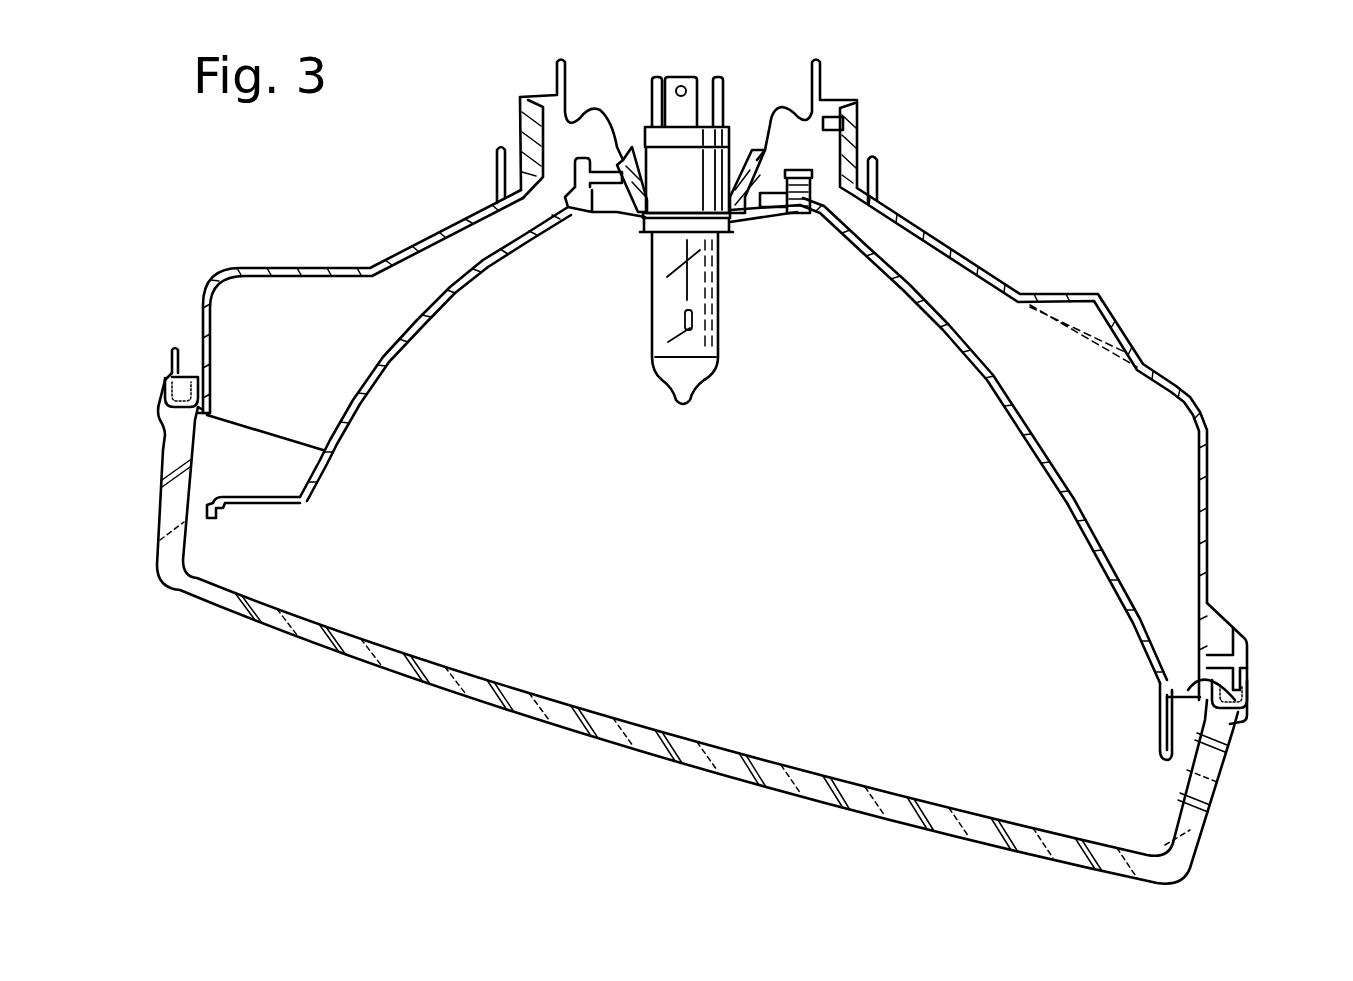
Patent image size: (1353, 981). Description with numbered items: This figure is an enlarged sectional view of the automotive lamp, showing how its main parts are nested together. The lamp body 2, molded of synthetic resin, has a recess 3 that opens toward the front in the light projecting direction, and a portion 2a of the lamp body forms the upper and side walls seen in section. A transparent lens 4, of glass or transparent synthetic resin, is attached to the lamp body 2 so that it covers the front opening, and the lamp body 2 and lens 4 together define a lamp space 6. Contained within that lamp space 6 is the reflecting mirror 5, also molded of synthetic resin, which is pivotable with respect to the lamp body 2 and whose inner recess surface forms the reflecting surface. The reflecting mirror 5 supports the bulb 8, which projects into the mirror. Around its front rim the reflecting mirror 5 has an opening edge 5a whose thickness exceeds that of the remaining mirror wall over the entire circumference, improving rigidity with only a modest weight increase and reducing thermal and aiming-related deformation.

The lamp body 2 is at (1180, 390).
The lamp body portion 2a is at (317, 267).
The recess 3 is at (1233, 723).
The lens 4 is at (527, 717).
The reflecting mirror 5 is at (410, 343).
The opening edge 5a is at (212, 523).
The lamp space 6 is at (945, 518).
The bulb 8 is at (717, 330).